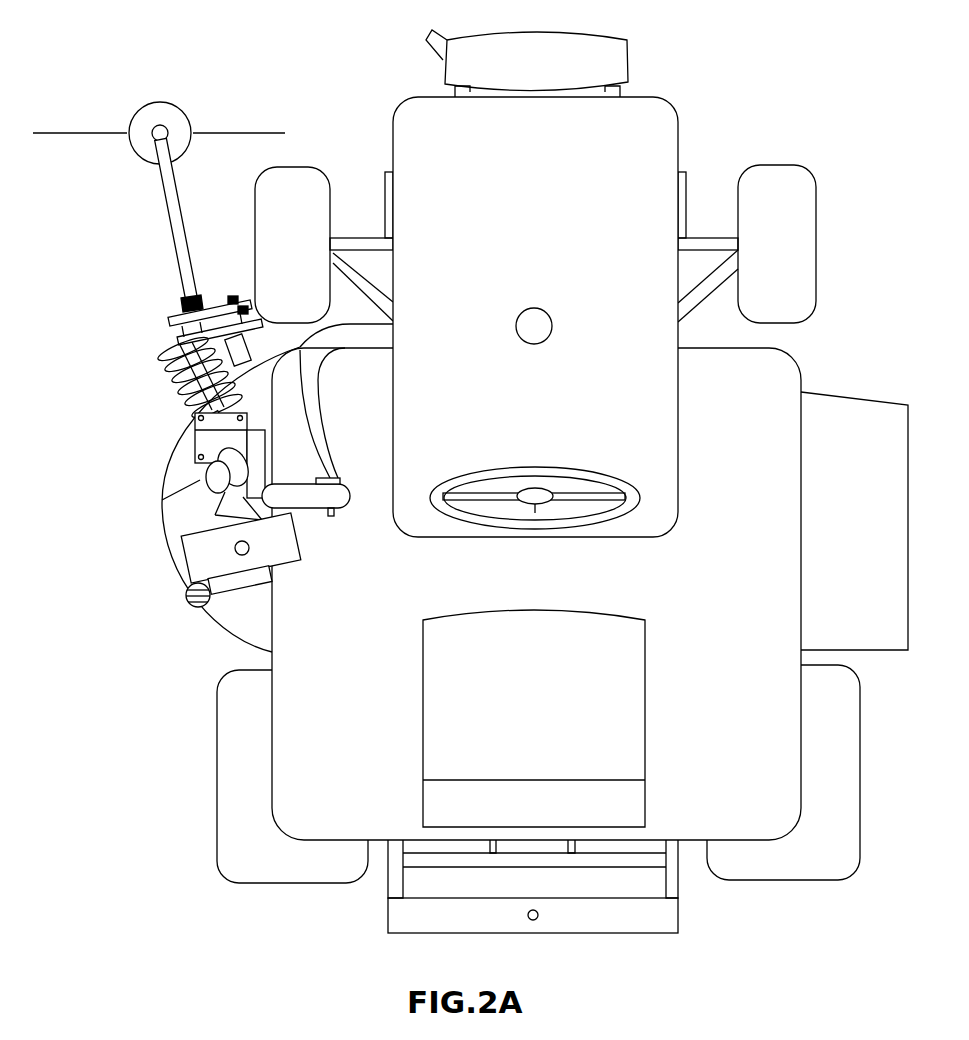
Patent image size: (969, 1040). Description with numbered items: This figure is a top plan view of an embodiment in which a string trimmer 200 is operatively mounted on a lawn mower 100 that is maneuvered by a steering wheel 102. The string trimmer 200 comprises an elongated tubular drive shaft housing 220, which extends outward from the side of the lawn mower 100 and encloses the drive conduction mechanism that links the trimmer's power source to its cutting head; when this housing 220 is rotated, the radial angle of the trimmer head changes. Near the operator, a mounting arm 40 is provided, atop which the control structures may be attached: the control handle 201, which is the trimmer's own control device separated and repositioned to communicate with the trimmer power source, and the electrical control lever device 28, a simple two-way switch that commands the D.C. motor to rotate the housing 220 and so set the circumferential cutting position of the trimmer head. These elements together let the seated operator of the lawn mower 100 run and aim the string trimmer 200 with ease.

The lawn mower 100 is at (442, 147).
The steering wheel 102 is at (533, 470).
The string trimmer 200 is at (172, 321).
The elongated tubular drive shaft housing 220 is at (175, 217).
The control handle 201 is at (343, 488).
The electrical control lever device 28 is at (338, 477).
The mounting arm 40 is at (257, 463).